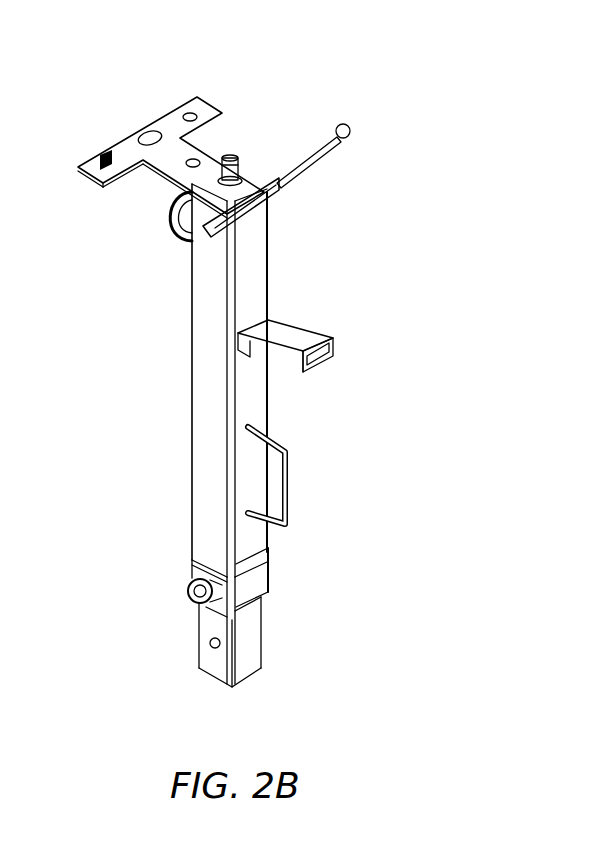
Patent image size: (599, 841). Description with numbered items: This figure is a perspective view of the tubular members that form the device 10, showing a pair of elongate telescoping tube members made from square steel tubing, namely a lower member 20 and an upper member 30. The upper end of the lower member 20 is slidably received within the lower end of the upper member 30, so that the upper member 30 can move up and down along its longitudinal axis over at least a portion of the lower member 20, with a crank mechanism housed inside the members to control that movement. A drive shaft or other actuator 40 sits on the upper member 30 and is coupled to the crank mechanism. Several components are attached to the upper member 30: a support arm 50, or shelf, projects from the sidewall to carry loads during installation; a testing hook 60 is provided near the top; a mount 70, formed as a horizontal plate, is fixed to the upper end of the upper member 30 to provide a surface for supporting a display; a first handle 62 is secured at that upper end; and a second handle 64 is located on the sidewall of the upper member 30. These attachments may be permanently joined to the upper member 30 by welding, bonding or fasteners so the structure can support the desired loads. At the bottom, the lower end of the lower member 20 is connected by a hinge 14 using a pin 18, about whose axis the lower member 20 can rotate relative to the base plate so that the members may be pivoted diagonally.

The device 10 is at (324, 195).
The hinge 14 is at (166, 577).
The pin 18 is at (186, 596).
The lower member 20 is at (279, 629).
The upper member 30 is at (182, 364).
The actuator 40 is at (232, 156).
The support arm 50 is at (307, 332).
The testing hook 60 is at (170, 235).
The first handle 62 is at (324, 128).
The second handle 64 is at (288, 475).
The mount 70 is at (157, 125).